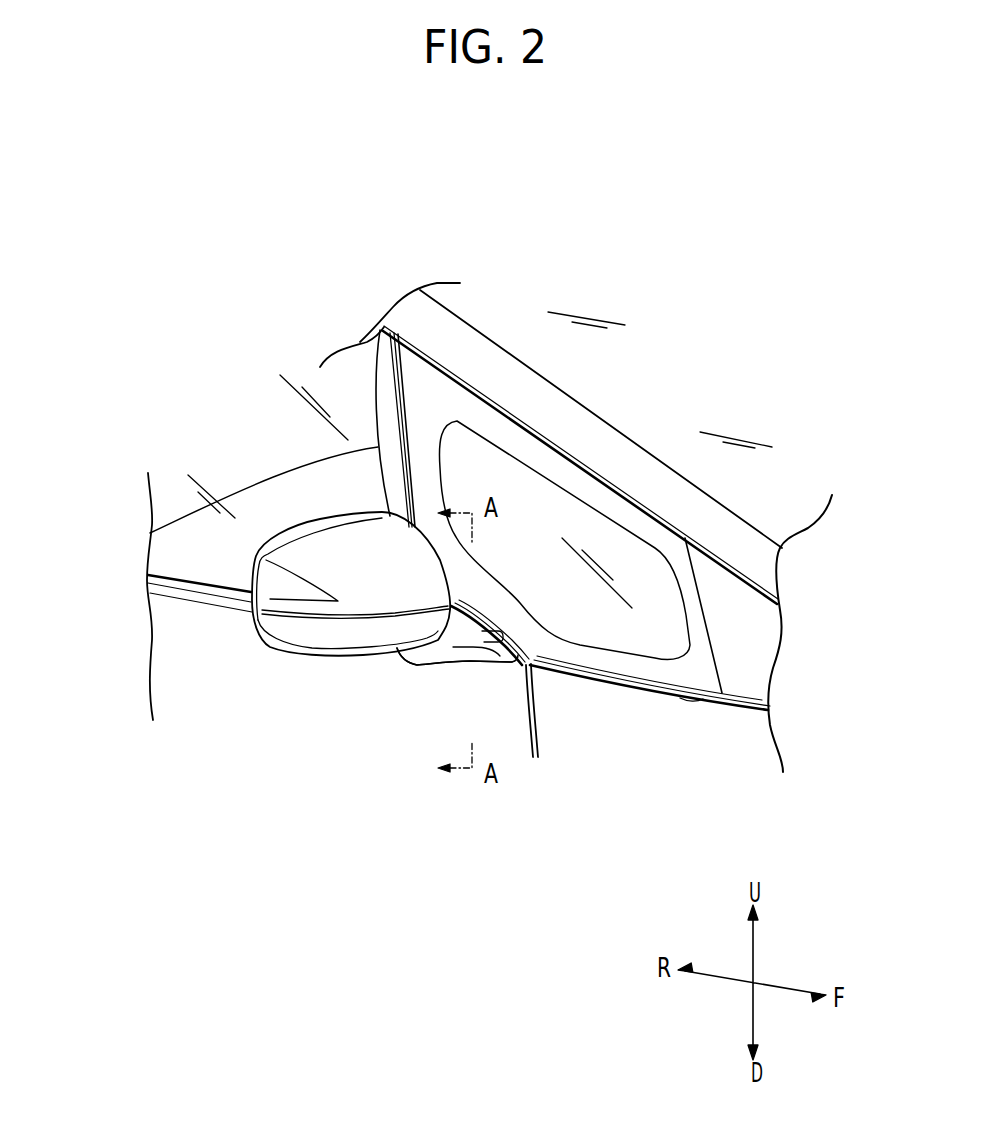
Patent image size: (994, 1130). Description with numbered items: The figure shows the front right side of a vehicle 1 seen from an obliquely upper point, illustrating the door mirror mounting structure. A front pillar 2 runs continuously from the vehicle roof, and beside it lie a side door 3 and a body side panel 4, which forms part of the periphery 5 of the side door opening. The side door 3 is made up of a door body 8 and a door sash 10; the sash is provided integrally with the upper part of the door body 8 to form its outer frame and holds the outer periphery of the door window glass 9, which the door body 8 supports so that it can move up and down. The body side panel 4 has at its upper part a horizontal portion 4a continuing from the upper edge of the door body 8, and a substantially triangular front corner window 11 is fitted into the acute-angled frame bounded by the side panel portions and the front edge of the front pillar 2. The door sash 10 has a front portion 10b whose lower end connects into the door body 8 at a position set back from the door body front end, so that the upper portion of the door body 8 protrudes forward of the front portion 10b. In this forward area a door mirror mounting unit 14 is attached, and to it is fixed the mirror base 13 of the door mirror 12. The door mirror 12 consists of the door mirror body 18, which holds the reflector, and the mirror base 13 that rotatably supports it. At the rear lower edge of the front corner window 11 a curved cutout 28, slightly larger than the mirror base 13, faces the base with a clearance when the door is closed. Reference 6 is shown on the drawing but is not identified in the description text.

The vehicle 1 is at (510, 278).
The front pillar 2 is at (580, 418).
The side door 3 is at (217, 547).
The body side panel 4 is at (617, 750).
The horizontal portion 4a is at (710, 698).
The periphery of side door opening 5 is at (528, 737).
The door mirror 6 is at (372, 733).
The door body 8 is at (172, 602).
The door window glass 9 is at (198, 423).
The door sash 10 is at (150, 532).
The front portion of door sash 10b is at (378, 368).
The front corner window 11 is at (577, 518).
The door mirror 12 is at (322, 634).
The mirror base 13 is at (413, 658).
The door mirror mounting unit 14 is at (473, 650).
The door mirror body 18 is at (280, 623).
The curved cutout 28 is at (496, 640).